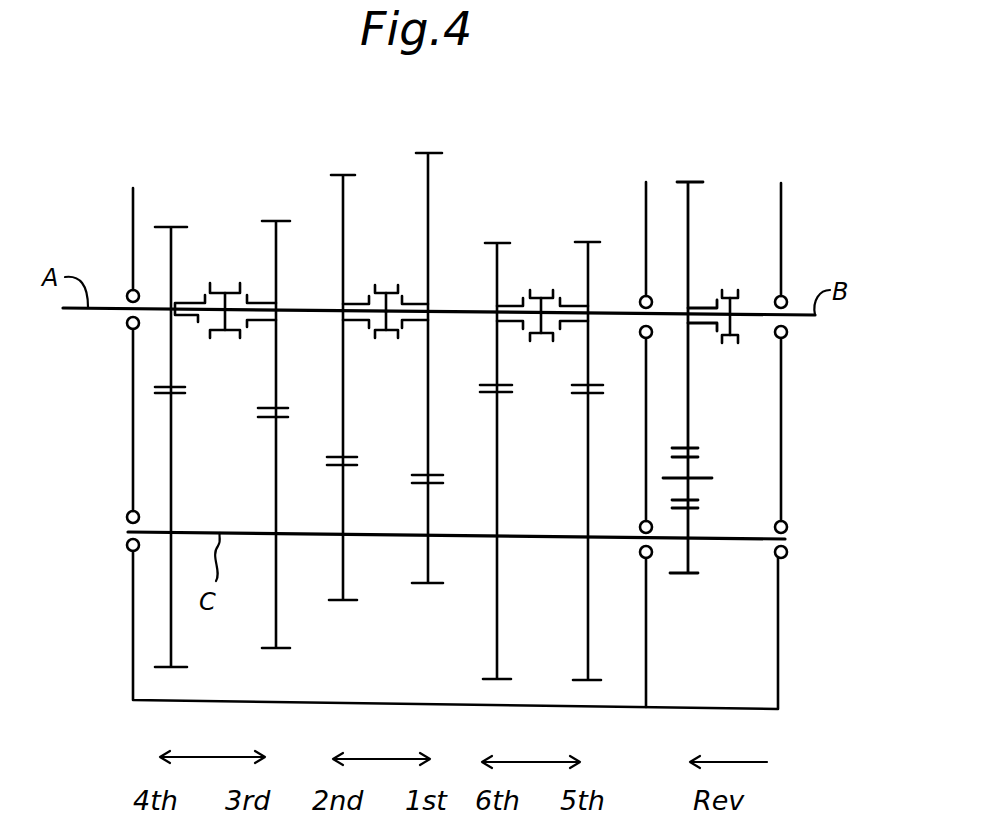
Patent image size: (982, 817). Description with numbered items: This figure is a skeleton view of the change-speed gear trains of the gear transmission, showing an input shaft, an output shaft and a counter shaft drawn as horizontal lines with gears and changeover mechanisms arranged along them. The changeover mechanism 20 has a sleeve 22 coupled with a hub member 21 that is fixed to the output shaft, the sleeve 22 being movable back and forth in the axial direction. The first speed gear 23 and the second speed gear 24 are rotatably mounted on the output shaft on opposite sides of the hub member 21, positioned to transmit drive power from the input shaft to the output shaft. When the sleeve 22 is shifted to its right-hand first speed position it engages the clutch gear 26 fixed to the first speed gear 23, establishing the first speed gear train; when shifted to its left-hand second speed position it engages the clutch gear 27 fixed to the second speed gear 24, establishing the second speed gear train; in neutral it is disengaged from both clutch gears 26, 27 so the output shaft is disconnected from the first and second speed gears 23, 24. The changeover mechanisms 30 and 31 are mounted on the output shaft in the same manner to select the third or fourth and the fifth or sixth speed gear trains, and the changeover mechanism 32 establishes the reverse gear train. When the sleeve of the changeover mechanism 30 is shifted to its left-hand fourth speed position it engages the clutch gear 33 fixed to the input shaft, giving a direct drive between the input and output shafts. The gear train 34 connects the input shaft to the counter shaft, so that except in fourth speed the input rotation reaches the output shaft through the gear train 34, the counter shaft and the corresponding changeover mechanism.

The changeover mechanism 20 is at (386, 275).
The hub member 21 is at (398, 322).
The sleeve 22 is at (382, 330).
The first speed gear 23 is at (433, 185).
The second speed gear 24 is at (343, 203).
The clutch gear 26 is at (405, 298).
The clutch gear 27 is at (368, 300).
The changeover mechanism 30 is at (224, 278).
The changeover mechanism 31 is at (540, 280).
The changeover mechanism 32 is at (731, 280).
The clutch gear 33 is at (198, 322).
The gear train 34 is at (155, 390).